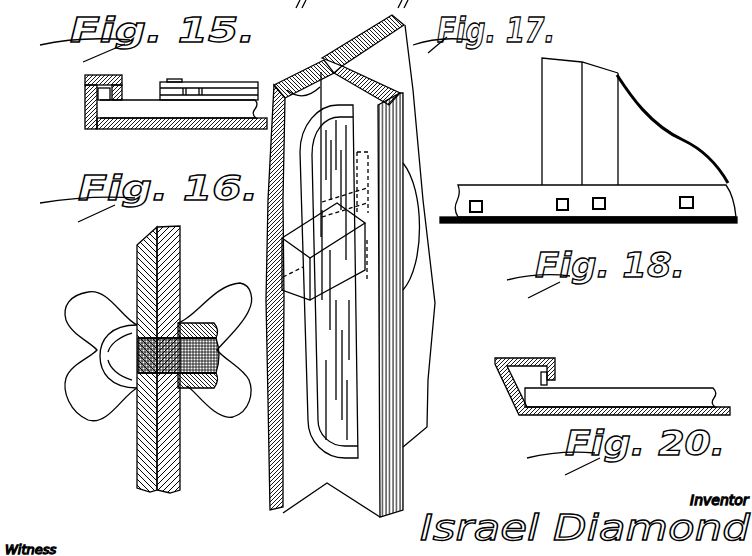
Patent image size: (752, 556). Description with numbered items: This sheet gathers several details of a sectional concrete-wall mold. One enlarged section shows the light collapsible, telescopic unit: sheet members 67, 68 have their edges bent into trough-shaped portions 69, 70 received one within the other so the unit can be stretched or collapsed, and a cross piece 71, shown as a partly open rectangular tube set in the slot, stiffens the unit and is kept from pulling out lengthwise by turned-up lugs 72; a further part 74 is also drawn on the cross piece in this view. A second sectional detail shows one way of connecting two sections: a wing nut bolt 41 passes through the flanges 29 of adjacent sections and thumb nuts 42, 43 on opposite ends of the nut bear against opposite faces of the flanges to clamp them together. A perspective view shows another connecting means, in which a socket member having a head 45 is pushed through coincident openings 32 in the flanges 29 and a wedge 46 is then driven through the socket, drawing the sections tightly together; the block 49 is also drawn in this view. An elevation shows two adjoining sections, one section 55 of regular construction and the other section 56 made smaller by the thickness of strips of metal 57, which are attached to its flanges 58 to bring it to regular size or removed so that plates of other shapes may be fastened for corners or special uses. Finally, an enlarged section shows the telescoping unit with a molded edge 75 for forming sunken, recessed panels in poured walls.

In FIG. 16, the flanges 29 is at (143, 262).
In FIG. 17, the flanges 29 is at (300, 77).
In FIG. 17, the coincident openings 32 is at (367, 248).
In FIG. 16, the wing nut bolt 41 is at (147, 384).
In FIG. 16, the thumb nut 42 is at (87, 303).
In FIG. 16, the thumb nut 43 is at (220, 297).
In FIG. 17, the head 45 is at (413, 190).
In FIG. 17, the wedge 46 is at (337, 137).
In FIG. 17, the box / block 49 is at (310, 291).
In FIG. 18, the section 55 is at (635, 121).
In FIG. 18, the section 56 is at (595, 182).
In FIG. 18, the strips of metal 57 is at (565, 221).
In FIG. 18, the flanges 58 is at (507, 203).
In FIG. 15, the member 67 is at (99, 130).
In FIG. 15, the member 68 is at (197, 129).
In FIG. 15, the trough-shaped portion 69 is at (100, 76).
In FIG. 15, the trough-shaped portion 70 is at (97, 96).
In FIG. 15, the cross piece 71 is at (233, 107).
In FIG. 15, the lugs 72 is at (125, 97).
In FIG. 15, the rail 74 is at (202, 97).
In FIG. 20, the molded edge 75 is at (507, 393).